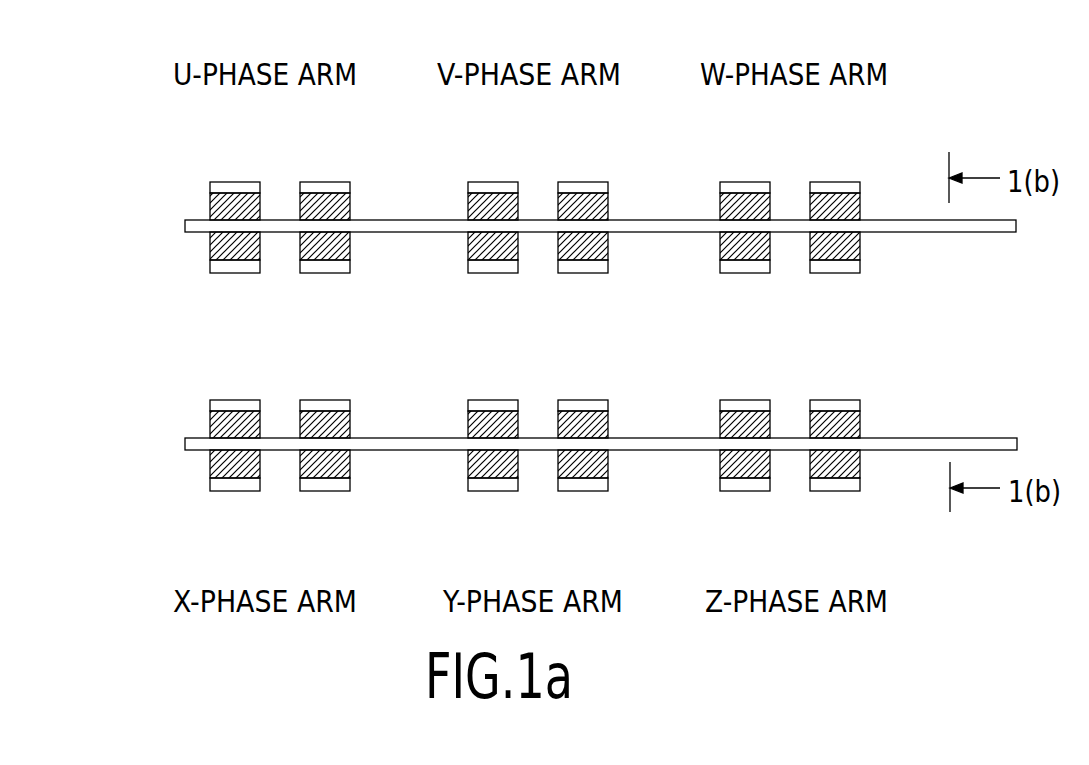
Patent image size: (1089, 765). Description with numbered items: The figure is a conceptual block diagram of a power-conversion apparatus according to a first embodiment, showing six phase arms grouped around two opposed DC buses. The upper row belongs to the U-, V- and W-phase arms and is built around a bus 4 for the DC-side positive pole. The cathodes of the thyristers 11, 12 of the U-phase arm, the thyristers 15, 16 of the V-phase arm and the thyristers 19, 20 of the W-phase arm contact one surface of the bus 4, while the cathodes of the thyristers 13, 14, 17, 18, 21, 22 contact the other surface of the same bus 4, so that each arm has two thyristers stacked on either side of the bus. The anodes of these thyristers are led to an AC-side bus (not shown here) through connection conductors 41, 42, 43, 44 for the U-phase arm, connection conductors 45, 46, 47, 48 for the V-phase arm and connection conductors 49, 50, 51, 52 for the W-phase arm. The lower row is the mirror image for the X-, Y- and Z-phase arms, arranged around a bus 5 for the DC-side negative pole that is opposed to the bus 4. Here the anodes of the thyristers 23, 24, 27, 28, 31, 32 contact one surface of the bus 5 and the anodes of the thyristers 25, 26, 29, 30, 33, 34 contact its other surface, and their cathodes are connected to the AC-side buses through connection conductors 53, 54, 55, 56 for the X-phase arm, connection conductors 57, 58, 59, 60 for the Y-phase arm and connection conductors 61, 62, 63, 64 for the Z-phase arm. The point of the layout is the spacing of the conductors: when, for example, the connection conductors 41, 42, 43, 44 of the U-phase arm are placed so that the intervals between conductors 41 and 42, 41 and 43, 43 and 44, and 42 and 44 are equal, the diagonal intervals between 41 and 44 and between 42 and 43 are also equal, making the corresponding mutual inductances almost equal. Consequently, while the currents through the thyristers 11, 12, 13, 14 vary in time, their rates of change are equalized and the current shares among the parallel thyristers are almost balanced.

The bus for a DC-side positive pole 4 is at (938, 235).
The bus for a DC-side negative pole 5 is at (946, 436).
The thyrister 11 is at (210, 210).
The thyrister 12 is at (300, 200).
The thyrister 13 is at (210, 245).
The thyrister 14 is at (300, 255).
The thyrister 15 is at (468, 210).
The thyrister 16 is at (558, 200).
The thyrister 17 is at (468, 245).
The thyrister 18 is at (558, 255).
The thyrister 19 is at (720, 210).
The thyrister 20 is at (810, 200).
The thyrister 21 is at (720, 245).
The thyrister 22 is at (810, 255).
The thyrister 23 is at (210, 430).
The thyrister 24 is at (300, 420).
The thyrister 25 is at (210, 465).
The thyrister 26 is at (300, 475).
The thyrister 27 is at (468, 430).
The thyrister 28 is at (558, 420).
The thyrister 29 is at (468, 465).
The thyrister 30 is at (558, 475).
The thyrister 31 is at (720, 430).
The thyrister 32 is at (810, 420).
The thyrister 33 is at (720, 465).
The thyrister 34 is at (810, 475).
The connection conductor 41 is at (228, 182).
The connection conductor 42 is at (327, 182).
The connection conductor 43 is at (232, 273).
The connection conductor 44 is at (323, 273).
The connection conductor 45 is at (486, 182).
The connection conductor 46 is at (585, 182).
The connection conductor 47 is at (490, 273).
The connection conductor 48 is at (581, 273).
The connection conductor 49 is at (738, 182).
The connection conductor 50 is at (837, 182).
The connection conductor 51 is at (742, 273).
The connection conductor 52 is at (833, 273).
The connection conductor 53 is at (228, 400).
The connection conductor 54 is at (327, 400).
The connection conductor 55 is at (232, 491).
The connection conductor 56 is at (323, 491).
The connection conductor 57 is at (486, 400).
The connection conductor 58 is at (585, 400).
The connection conductor 59 is at (490, 491).
The connection conductor 60 is at (581, 491).
The connection conductor 61 is at (738, 400).
The connection conductor 62 is at (837, 400).
The connection conductor 63 is at (742, 491).
The connection conductor 64 is at (833, 491).